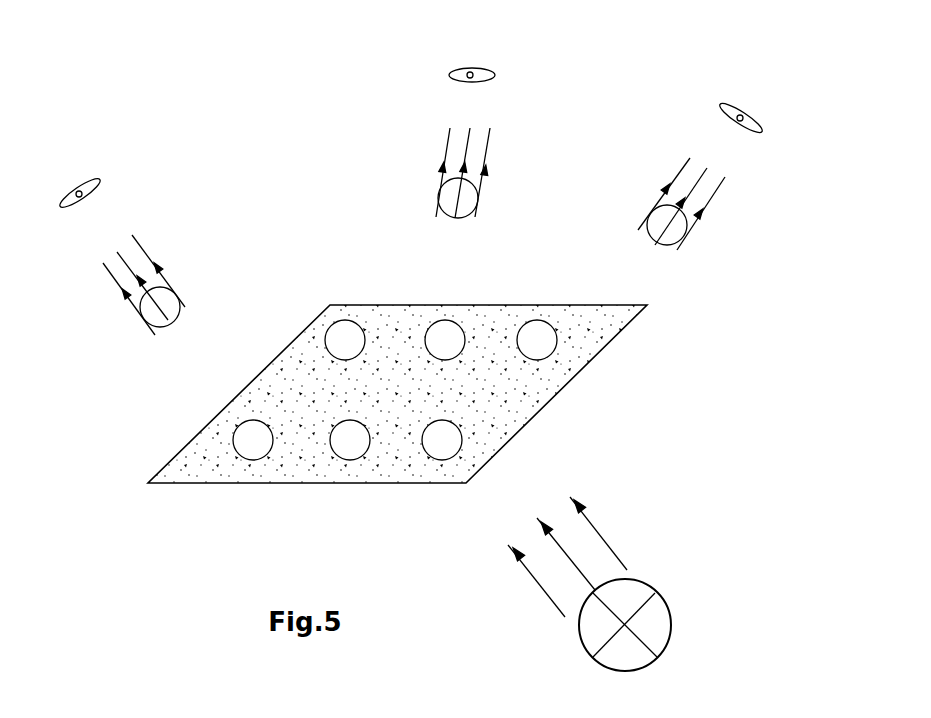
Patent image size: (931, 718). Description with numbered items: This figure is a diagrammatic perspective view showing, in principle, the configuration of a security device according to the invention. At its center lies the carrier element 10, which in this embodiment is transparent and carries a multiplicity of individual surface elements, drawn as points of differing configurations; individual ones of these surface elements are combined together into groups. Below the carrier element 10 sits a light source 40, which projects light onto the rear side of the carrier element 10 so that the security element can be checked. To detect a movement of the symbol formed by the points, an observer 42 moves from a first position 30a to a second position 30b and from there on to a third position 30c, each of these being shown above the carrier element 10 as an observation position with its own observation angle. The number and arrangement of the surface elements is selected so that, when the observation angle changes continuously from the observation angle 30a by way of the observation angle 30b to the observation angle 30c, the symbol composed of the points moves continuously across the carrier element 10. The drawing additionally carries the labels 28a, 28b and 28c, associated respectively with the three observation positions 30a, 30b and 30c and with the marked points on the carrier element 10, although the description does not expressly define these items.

The carrier element 10 is at (522, 397).
The first light source 28a is at (326, 340).
The second light source 28b is at (445, 320).
The third light source 28c is at (557, 340).
The observation angle 30a is at (85, 209).
The observation angle 30b is at (472, 91).
The observation angle 30c is at (735, 129).
The light source 40 is at (652, 615).
The observer 42 is at (92, 182).